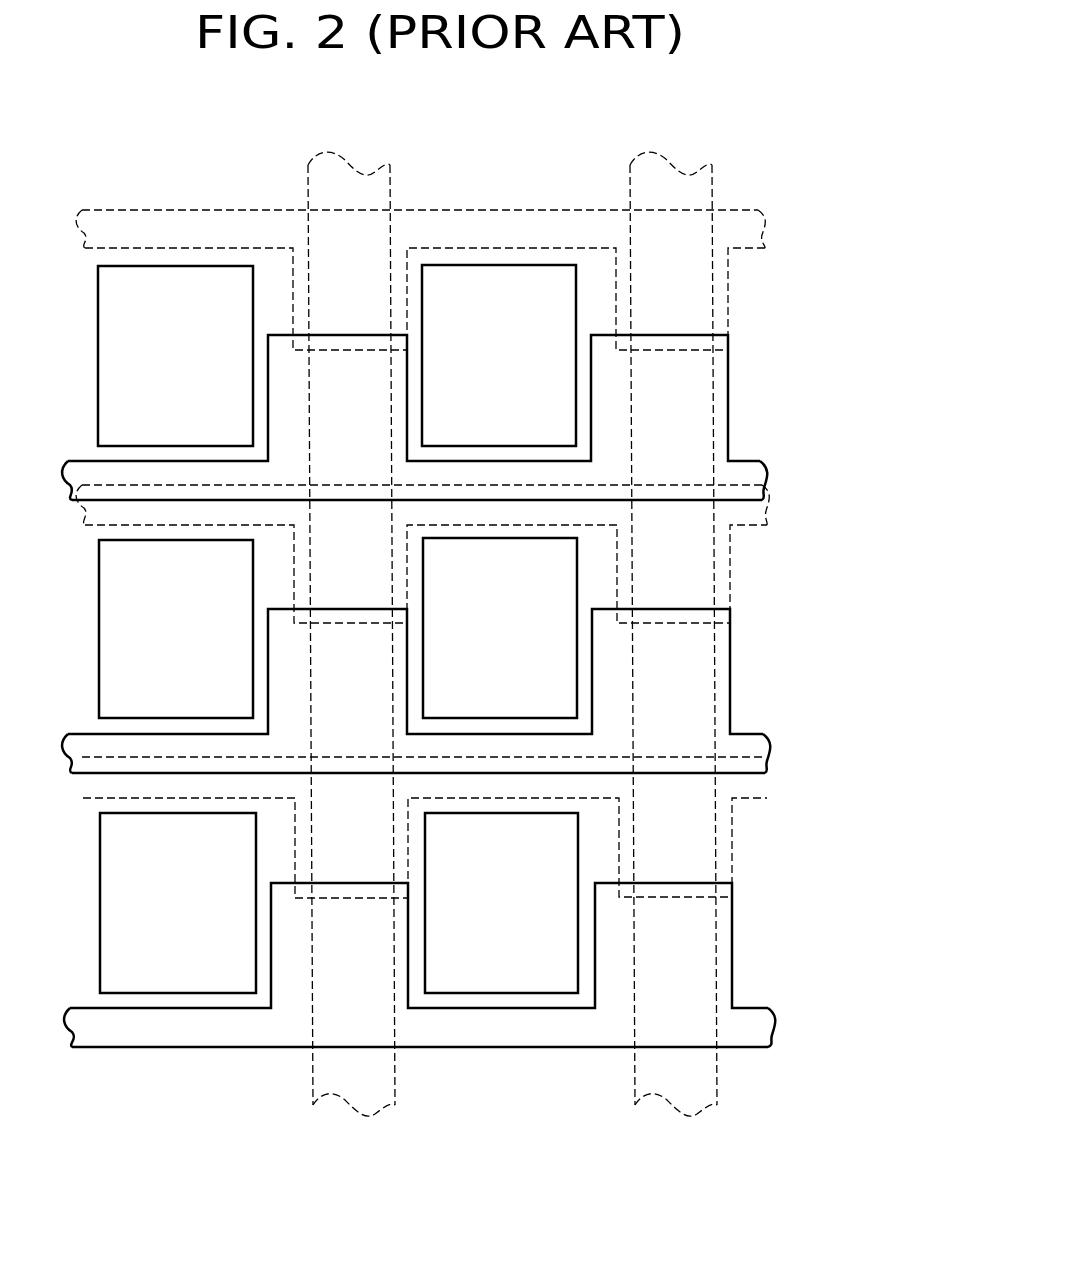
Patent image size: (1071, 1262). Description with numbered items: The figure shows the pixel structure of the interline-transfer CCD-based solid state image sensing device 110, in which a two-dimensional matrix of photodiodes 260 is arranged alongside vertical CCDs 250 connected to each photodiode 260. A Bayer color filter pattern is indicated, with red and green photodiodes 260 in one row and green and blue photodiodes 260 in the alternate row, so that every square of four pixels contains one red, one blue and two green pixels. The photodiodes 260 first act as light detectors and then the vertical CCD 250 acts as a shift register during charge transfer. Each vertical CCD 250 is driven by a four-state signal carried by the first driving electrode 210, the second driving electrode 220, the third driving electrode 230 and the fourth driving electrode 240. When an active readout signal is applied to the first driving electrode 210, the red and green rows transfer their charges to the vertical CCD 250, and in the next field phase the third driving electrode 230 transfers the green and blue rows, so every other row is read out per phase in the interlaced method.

The CCD-based solid state image sensing device 110 is at (716, 146).
The driving electrode transferring V1 210 is at (748, 462).
The driving electrode transferring V2 220 is at (748, 524).
The driving electrode transferring V3 230 is at (752, 734).
The driving electrode transferring V4 240 is at (750, 798).
The vertical CCD 250 is at (718, 1083).
The photodiode 260 is at (98, 357).